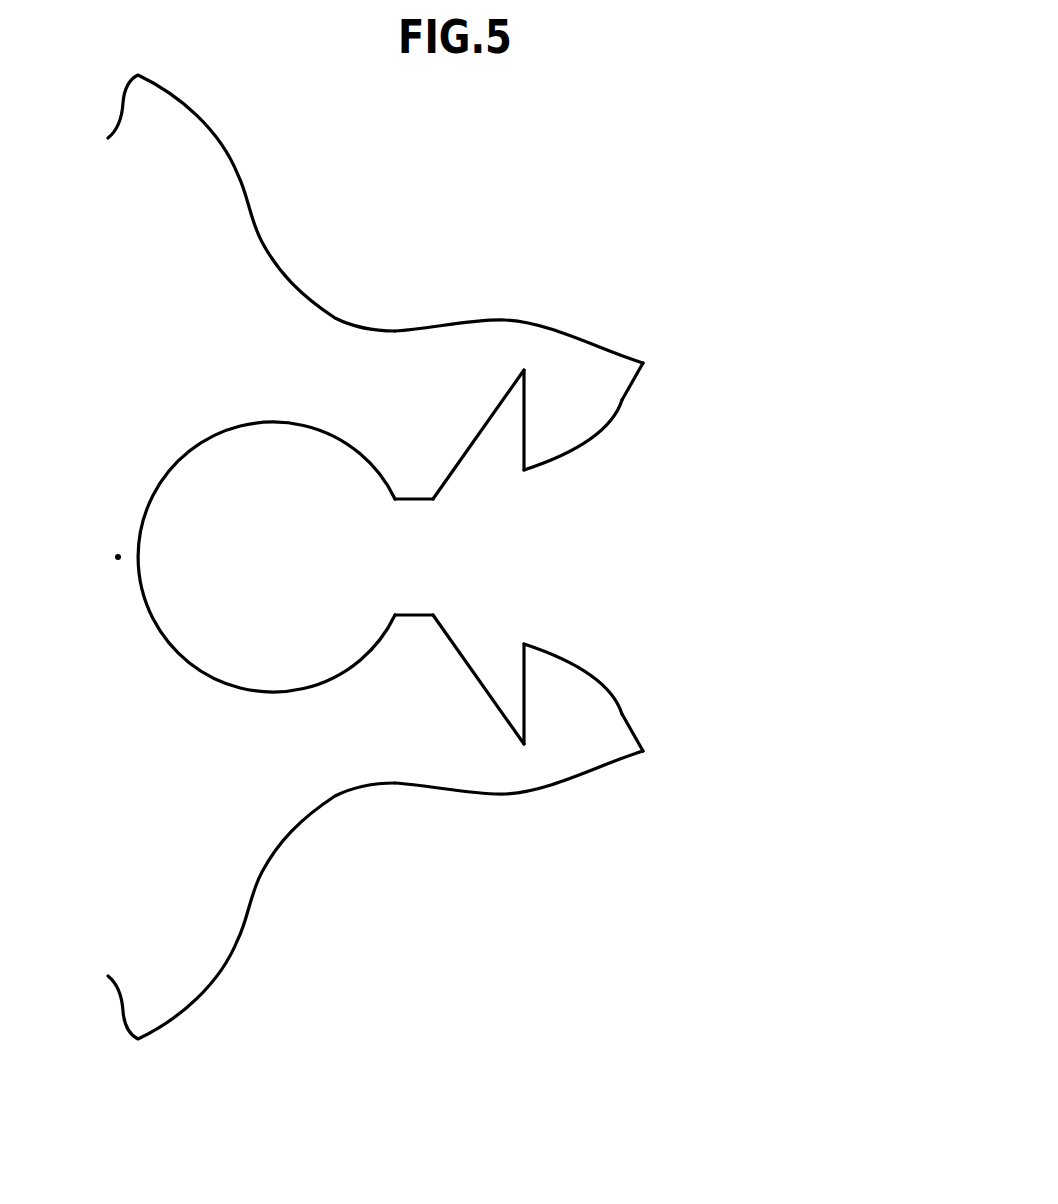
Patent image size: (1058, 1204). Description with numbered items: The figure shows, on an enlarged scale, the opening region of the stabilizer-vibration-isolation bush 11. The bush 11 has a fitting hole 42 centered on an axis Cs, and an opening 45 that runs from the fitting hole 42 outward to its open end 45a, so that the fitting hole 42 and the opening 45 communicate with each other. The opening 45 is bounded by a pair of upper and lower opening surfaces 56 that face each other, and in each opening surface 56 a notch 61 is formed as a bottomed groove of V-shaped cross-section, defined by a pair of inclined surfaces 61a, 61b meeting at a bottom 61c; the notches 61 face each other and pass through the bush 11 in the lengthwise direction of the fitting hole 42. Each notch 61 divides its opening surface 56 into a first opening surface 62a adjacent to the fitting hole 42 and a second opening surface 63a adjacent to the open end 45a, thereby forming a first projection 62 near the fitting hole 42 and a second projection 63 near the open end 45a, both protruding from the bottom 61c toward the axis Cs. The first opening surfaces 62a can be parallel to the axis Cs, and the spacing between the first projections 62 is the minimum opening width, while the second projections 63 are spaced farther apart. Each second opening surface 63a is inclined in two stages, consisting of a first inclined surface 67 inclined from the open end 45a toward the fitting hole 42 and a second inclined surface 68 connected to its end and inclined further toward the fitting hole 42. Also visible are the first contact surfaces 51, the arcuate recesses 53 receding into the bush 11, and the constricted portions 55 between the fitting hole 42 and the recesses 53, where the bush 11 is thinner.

The bush 11 is at (677, 96).
The fitting hole 42 is at (144, 593).
The axis Cs is at (110, 546).
The opening 45 is at (400, 547).
The open end 45a is at (644, 363).
The first contact surface 51 is at (613, 343).
The recess 53 is at (292, 272).
The constricted portion 55 is at (315, 375).
The opening surface 56 is at (772, 420).
The notch 61 is at (605, 246).
The inclined surface 61a is at (478, 425).
The inclined surface 61b is at (523, 440).
The bottom 61c is at (525, 372).
The first projection 62 is at (420, 460).
The first opening surface 62a is at (414, 500).
The second projection 63 is at (565, 414).
The second opening surface 63a is at (706, 393).
The first inclined surface 67 is at (620, 406).
The second inclined surface 68 is at (563, 456).